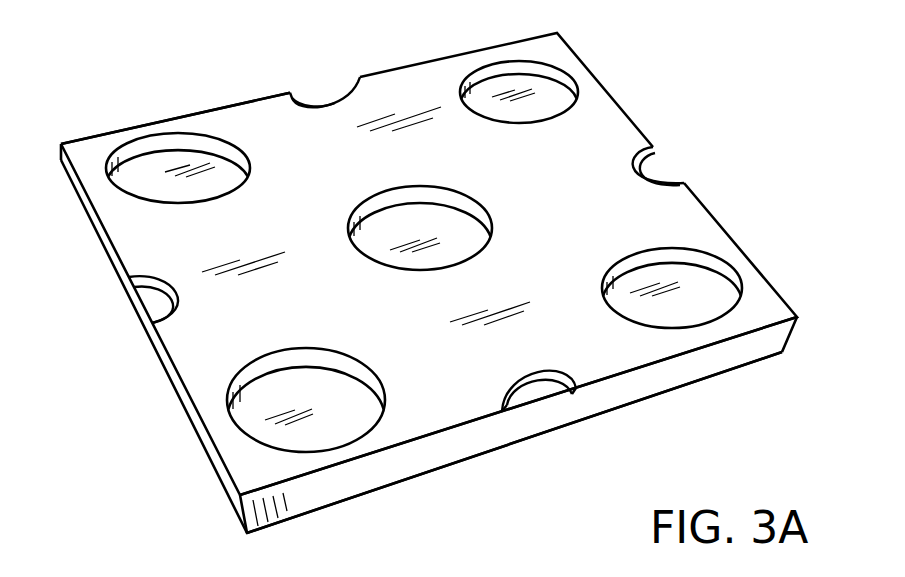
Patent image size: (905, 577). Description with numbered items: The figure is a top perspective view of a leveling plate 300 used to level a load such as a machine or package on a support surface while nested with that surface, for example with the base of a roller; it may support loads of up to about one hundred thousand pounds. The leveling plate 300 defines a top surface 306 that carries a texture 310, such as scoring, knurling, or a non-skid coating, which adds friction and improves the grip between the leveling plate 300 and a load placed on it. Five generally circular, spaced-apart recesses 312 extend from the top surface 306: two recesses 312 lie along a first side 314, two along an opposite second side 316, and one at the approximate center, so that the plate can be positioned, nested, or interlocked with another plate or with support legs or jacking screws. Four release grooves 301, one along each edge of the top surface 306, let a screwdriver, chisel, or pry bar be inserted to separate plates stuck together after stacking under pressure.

The leveling plate 300 is at (637, 76).
The grooves 301 is at (337, 98).
The top surface 306 is at (575, 262).
The texture 310 is at (462, 337).
The recesses 312 is at (152, 176).
The first side 314 is at (693, 368).
The second side 316 is at (194, 112).